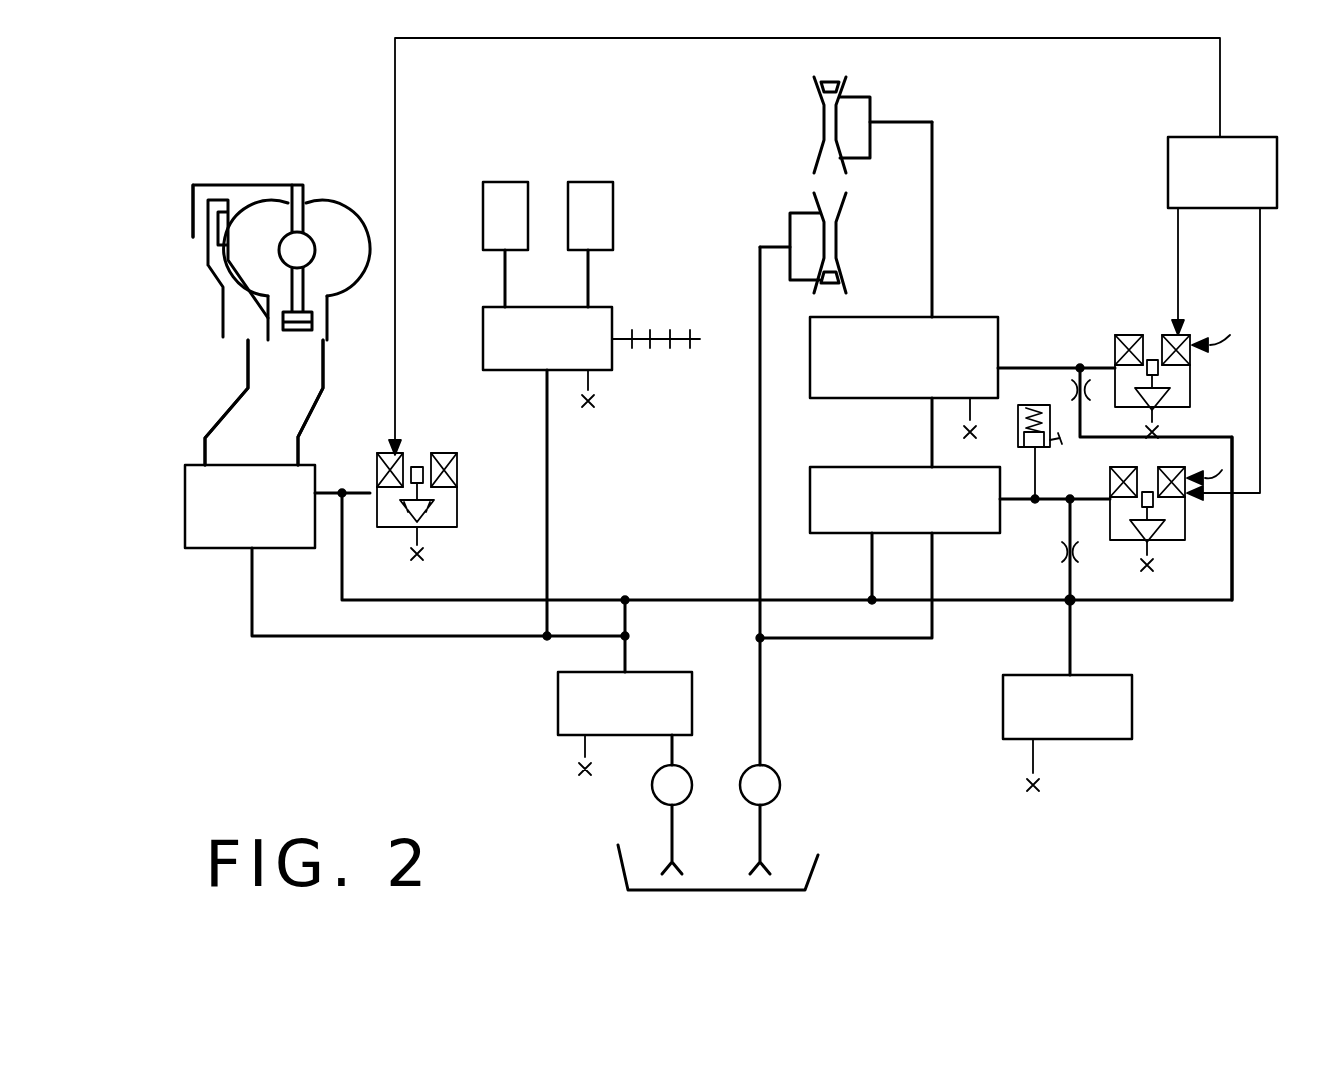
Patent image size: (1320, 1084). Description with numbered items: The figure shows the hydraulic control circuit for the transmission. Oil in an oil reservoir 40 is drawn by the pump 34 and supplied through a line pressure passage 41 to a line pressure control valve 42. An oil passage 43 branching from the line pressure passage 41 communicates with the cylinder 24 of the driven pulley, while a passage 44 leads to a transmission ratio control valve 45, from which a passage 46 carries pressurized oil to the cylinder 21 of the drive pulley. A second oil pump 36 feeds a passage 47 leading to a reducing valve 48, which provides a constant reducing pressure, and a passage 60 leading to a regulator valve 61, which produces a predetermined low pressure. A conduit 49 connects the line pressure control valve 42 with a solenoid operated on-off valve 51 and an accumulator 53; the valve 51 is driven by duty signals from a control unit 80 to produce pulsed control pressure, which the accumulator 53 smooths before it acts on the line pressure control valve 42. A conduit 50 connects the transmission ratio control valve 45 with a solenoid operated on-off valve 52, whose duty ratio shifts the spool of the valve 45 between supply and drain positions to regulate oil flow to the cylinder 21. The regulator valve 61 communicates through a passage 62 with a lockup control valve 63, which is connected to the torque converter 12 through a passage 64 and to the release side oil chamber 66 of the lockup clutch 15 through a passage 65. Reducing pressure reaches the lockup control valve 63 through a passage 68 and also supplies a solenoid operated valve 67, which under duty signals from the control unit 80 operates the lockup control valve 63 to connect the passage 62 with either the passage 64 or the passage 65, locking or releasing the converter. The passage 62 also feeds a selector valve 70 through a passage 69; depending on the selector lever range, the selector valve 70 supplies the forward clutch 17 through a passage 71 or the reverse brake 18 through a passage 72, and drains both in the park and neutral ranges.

The torque converter 12 is at (336, 230).
The lockup clutch 15 is at (222, 205).
The release side oil chamber 66 is at (214, 254).
The passage 65 is at (207, 425).
The passage 64 is at (312, 405).
The lockup control valve 63 is at (212, 556).
The solenoid operated valve 67 is at (430, 455).
The passage 68 is at (505, 598).
The passage 62 is at (375, 640).
The forward clutch 17 is at (522, 180).
The reverse brake 18 is at (608, 180).
The passage 71 is at (503, 283).
The passage 72 is at (586, 284).
The selector valve 70 is at (482, 358).
The passage 69 is at (550, 496).
The cylinder 21 is at (872, 104).
The cylinder 24 is at (788, 228).
The passage 46 is at (934, 229).
The oil passage 43 is at (758, 452).
The transmission ratio control valve 45 is at (985, 306).
The passage 44 is at (930, 441).
The line pressure control valve 42 is at (838, 465).
The passage 47 is at (830, 600).
The line pressure passage 41 is at (848, 640).
The regulator valve 61 is at (690, 670).
The passage 60 is at (676, 752).
The oil pump 36 is at (680, 808).
The pump 34 is at (778, 797).
The oil reservoir 40 is at (817, 880).
The reducing valve 48 is at (1145, 665).
The conduit 49 is at (1065, 584).
The conduit 50 is at (1234, 542).
The solenoid operated on-off valve 52 is at (1176, 323).
The solenoid operated on-off valve 51 is at (1185, 389).
The accumulator 53 is at (1058, 446).
The control unit 80 is at (1178, 135).